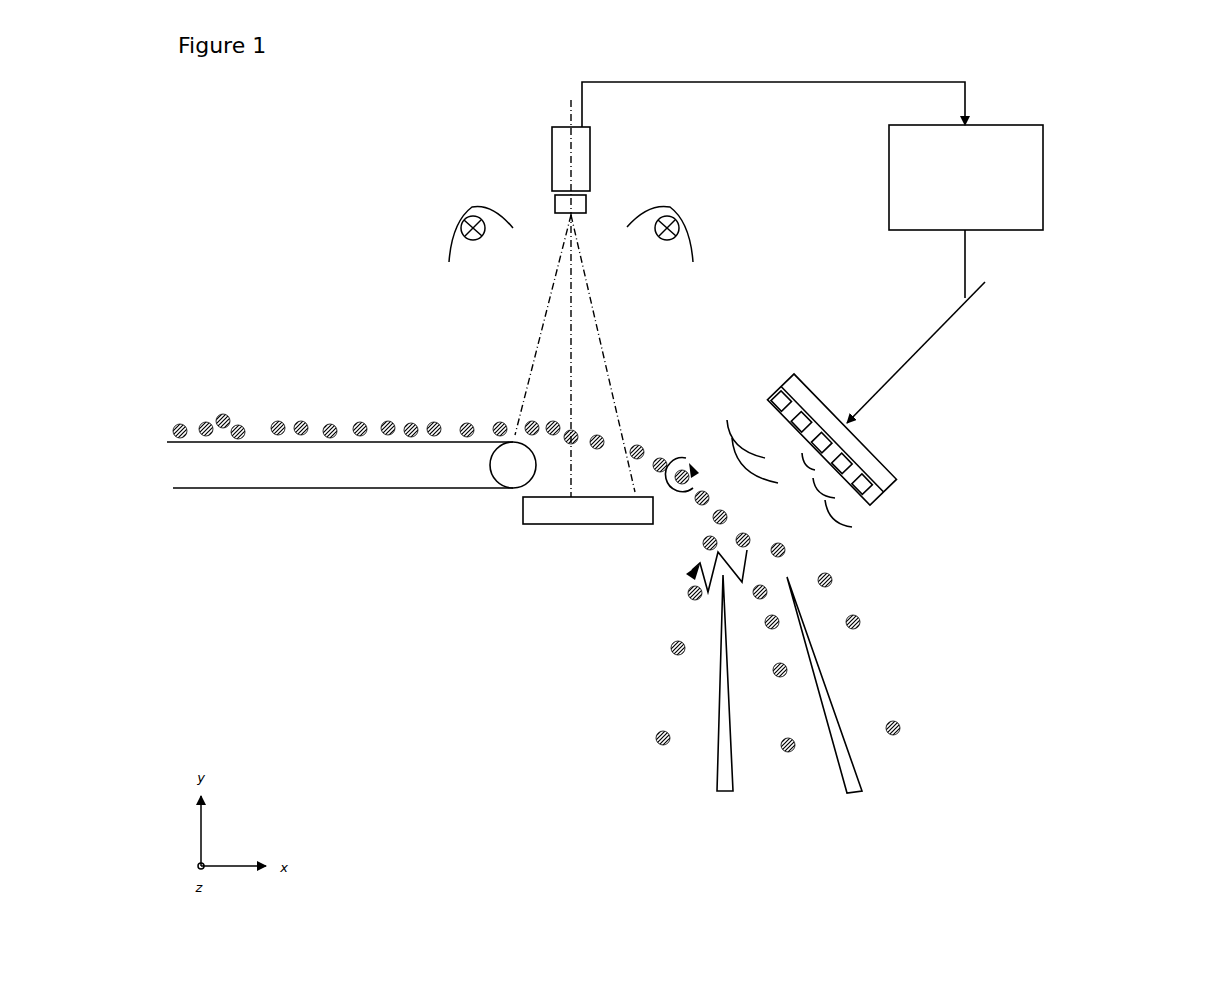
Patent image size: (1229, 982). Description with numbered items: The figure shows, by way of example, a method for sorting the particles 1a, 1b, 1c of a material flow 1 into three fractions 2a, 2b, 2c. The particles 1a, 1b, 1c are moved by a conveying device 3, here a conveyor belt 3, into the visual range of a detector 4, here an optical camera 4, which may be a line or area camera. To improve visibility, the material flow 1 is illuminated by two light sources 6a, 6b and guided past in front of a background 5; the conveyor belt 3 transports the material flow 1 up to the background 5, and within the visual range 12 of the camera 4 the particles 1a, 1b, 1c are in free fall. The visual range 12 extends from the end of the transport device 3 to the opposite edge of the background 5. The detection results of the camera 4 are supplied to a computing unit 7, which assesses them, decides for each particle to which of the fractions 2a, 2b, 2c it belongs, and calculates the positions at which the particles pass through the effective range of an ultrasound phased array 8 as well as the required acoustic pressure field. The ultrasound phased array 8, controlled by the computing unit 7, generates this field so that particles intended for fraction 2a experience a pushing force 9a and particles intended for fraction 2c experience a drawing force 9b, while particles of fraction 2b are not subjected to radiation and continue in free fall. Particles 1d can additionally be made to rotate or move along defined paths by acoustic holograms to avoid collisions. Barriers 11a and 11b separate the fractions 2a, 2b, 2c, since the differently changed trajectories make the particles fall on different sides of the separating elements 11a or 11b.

The material flow 1 is at (277, 425).
The particle 1a is at (360, 428).
The particle 1b is at (434, 428).
The particle 1c is at (500, 428).
The particle 1d is at (693, 463).
The fraction 2a is at (672, 653).
The fraction 2b is at (779, 677).
The fraction 2c is at (860, 624).
The conveying device 3 is at (202, 488).
The detector 4 is at (549, 160).
The background 5 is at (523, 507).
The light source 6a is at (470, 208).
The light source 6b is at (677, 208).
The computing unit 7 is at (1020, 157).
The ultrasound phased array 8 is at (865, 453).
The pushing force 9a is at (700, 548).
The drawing force 9b is at (797, 553).
The barrier 11a is at (717, 791).
The barrier 11b is at (862, 791).
The visual range 12 is at (593, 313).